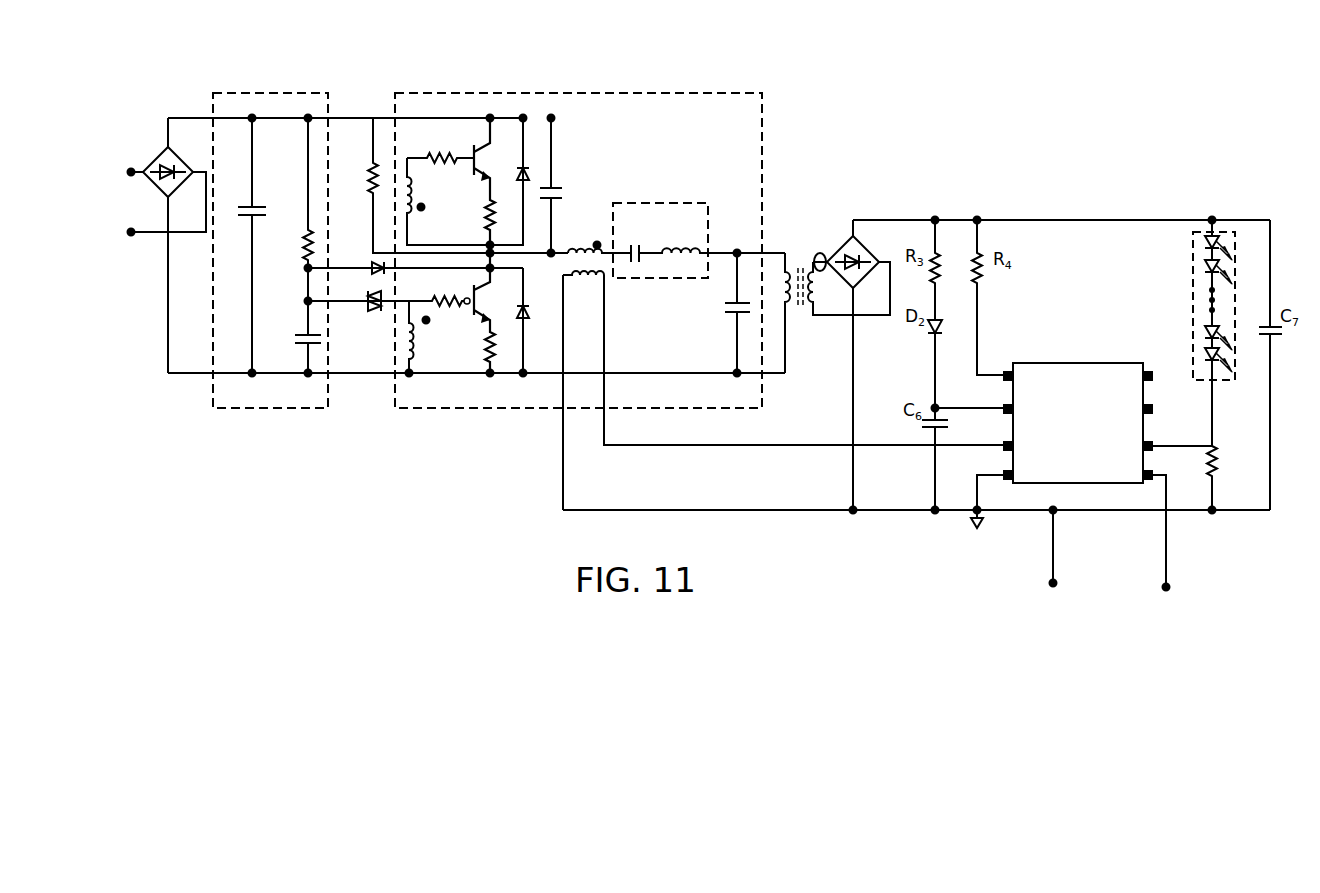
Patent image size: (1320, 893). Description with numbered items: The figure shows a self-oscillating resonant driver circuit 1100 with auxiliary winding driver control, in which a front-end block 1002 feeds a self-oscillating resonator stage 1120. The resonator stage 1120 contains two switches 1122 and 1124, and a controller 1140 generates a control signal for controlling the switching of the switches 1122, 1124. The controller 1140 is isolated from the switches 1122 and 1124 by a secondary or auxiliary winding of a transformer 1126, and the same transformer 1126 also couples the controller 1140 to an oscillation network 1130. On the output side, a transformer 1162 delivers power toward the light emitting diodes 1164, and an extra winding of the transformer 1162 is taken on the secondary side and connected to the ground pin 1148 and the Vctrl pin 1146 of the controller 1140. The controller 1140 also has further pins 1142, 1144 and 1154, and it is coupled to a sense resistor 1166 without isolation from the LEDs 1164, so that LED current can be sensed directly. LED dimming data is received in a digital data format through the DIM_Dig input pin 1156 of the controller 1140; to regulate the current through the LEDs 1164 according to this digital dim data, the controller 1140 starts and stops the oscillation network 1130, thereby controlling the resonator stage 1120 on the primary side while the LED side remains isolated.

The LED lighting system with input rectifier 1100 is at (126, 116).
The filter / divider block (C1, R1, C2) 1002 is at (291, 88).
The self-oscillating resonator stage 1120 is at (741, 88).
The switch 1122 is at (476, 158).
The switch 1124 is at (472, 318).
The transformer 1126 is at (601, 258).
The oscillation network 1130 is at (639, 200).
The transformer 1162 is at (822, 252).
The controller 1140 is at (1037, 485).
The pin 1142 is at (1004, 371).
The pin 1144 is at (1003, 408).
The Vctrl pin 1146 is at (1003, 444).
The ground pin 1148 is at (1003, 474).
The pin 1154 is at (1151, 443).
The DIM_Dig input pin 1156 is at (1145, 482).
The light emitting diodes 1164 is at (1226, 228).
The sense resistor 1166 is at (1216, 473).